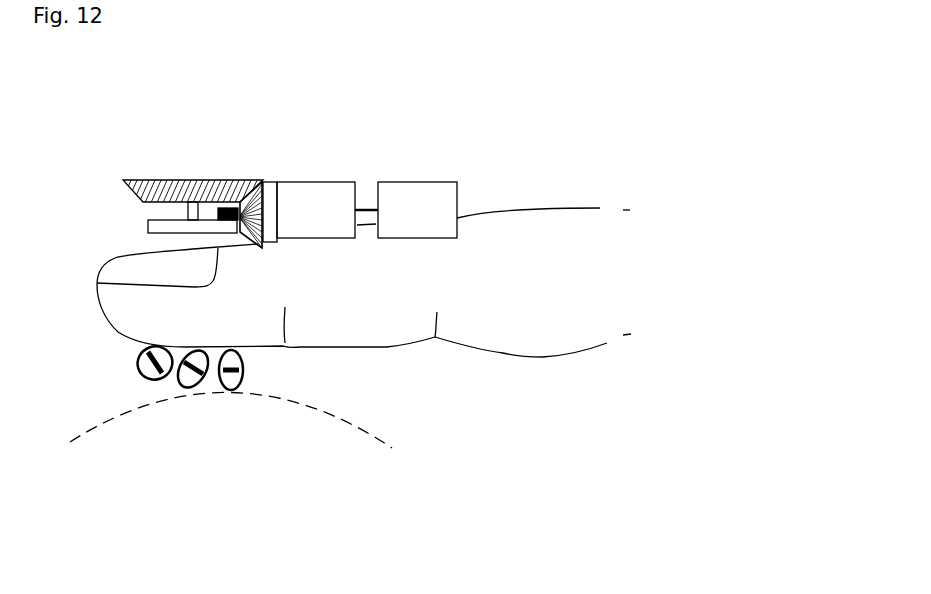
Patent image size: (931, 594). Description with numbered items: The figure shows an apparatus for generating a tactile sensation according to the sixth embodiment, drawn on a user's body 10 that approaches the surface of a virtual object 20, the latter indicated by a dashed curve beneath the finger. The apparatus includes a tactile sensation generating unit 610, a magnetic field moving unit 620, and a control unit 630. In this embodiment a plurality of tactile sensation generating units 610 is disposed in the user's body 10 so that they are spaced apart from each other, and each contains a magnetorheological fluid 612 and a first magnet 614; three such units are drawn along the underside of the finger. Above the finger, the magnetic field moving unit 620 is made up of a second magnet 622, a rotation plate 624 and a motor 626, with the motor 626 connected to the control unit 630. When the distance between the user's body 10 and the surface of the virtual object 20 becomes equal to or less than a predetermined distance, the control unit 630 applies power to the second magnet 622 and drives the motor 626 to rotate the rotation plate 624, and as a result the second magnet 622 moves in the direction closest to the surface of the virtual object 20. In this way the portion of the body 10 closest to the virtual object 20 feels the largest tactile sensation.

The body 10 is at (532, 224).
The virtual object 20 is at (363, 428).
The tactile sensation generating unit 610 is at (212, 443).
The magnetorheological fluid 612 is at (222, 387).
The first magnet 614 is at (243, 366).
The magnetic field moving unit 620 is at (249, 161).
The second magnet 622 is at (209, 213).
The rotation plate 624 is at (163, 222).
The motor 626 is at (316, 179).
The control unit 630 is at (418, 190).